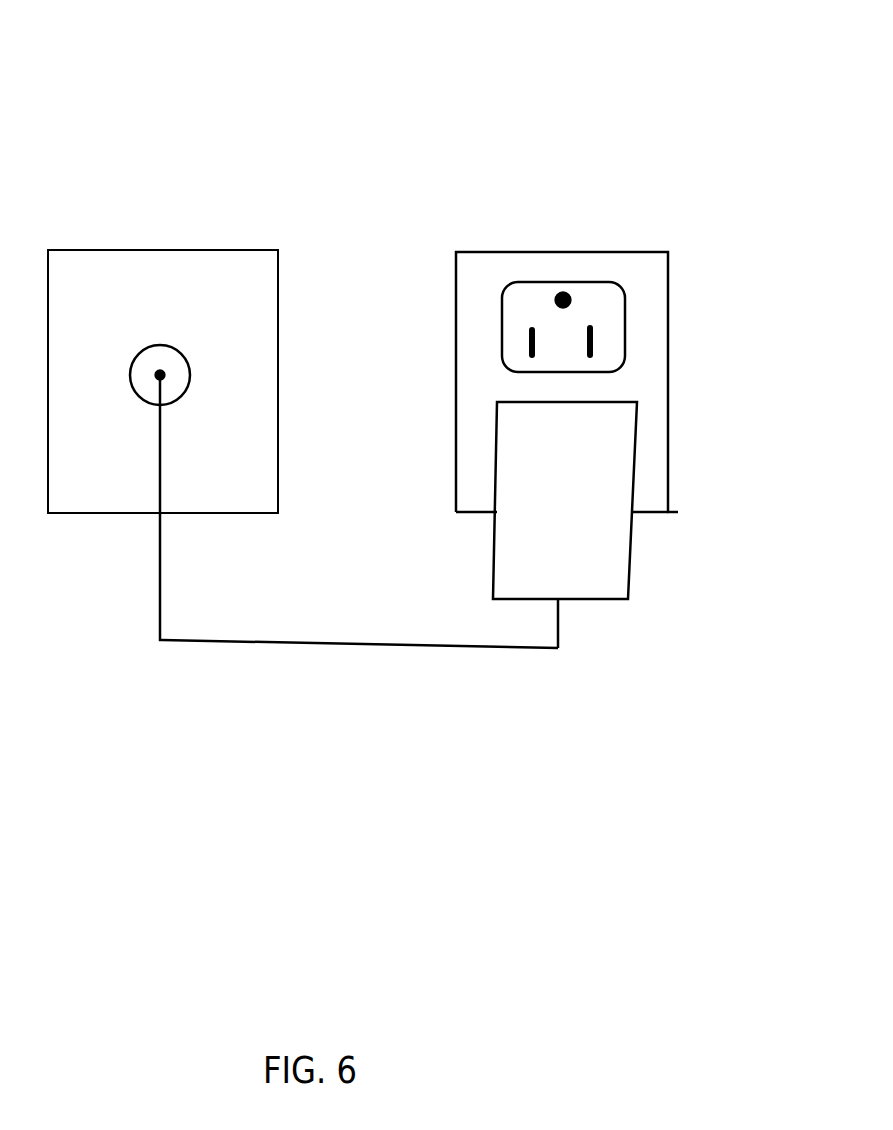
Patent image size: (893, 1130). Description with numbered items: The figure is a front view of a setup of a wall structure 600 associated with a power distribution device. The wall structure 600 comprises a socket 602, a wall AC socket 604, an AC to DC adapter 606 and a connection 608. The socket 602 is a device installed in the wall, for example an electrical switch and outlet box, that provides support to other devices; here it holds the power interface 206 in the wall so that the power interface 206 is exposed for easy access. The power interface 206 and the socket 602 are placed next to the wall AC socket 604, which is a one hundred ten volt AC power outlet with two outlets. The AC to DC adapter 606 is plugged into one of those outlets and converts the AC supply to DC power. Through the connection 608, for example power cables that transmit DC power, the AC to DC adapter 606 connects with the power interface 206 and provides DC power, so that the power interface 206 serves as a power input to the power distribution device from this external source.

The wall structure 600 is at (458, 0).
The socket 602 is at (183, 250).
The power interface 206 is at (175, 357).
The wall AC socket 604 is at (624, 243).
The AC to DC adapter 606 is at (630, 572).
The connection 608 is at (267, 637).